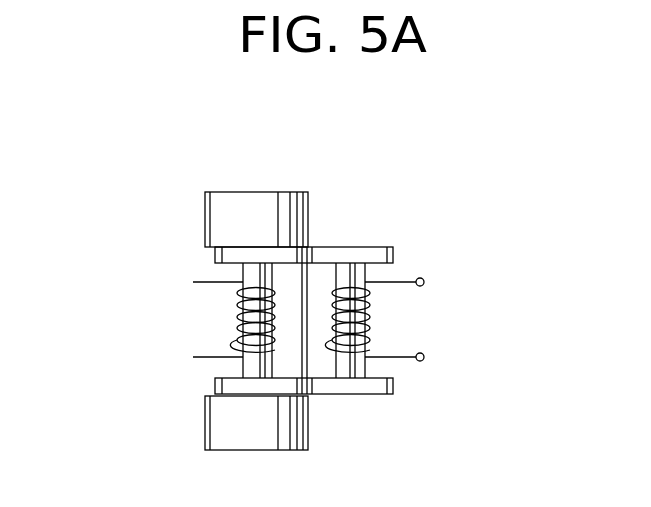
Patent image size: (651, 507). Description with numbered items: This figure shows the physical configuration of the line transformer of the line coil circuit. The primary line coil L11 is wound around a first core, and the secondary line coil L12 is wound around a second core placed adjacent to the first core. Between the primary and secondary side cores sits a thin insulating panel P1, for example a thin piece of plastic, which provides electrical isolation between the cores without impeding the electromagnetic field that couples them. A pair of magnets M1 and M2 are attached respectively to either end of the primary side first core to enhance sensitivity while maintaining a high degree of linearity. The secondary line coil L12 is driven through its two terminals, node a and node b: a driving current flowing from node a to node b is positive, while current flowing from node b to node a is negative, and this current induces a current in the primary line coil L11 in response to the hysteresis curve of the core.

The magnet M1 is at (224, 191).
The magnet M2 is at (225, 450).
The insulating panel P1 is at (304, 278).
The primary line coil L11 is at (180, 357).
The secondary line coil L12 is at (451, 357).
The node a is at (402, 281).
The node b is at (402, 356).